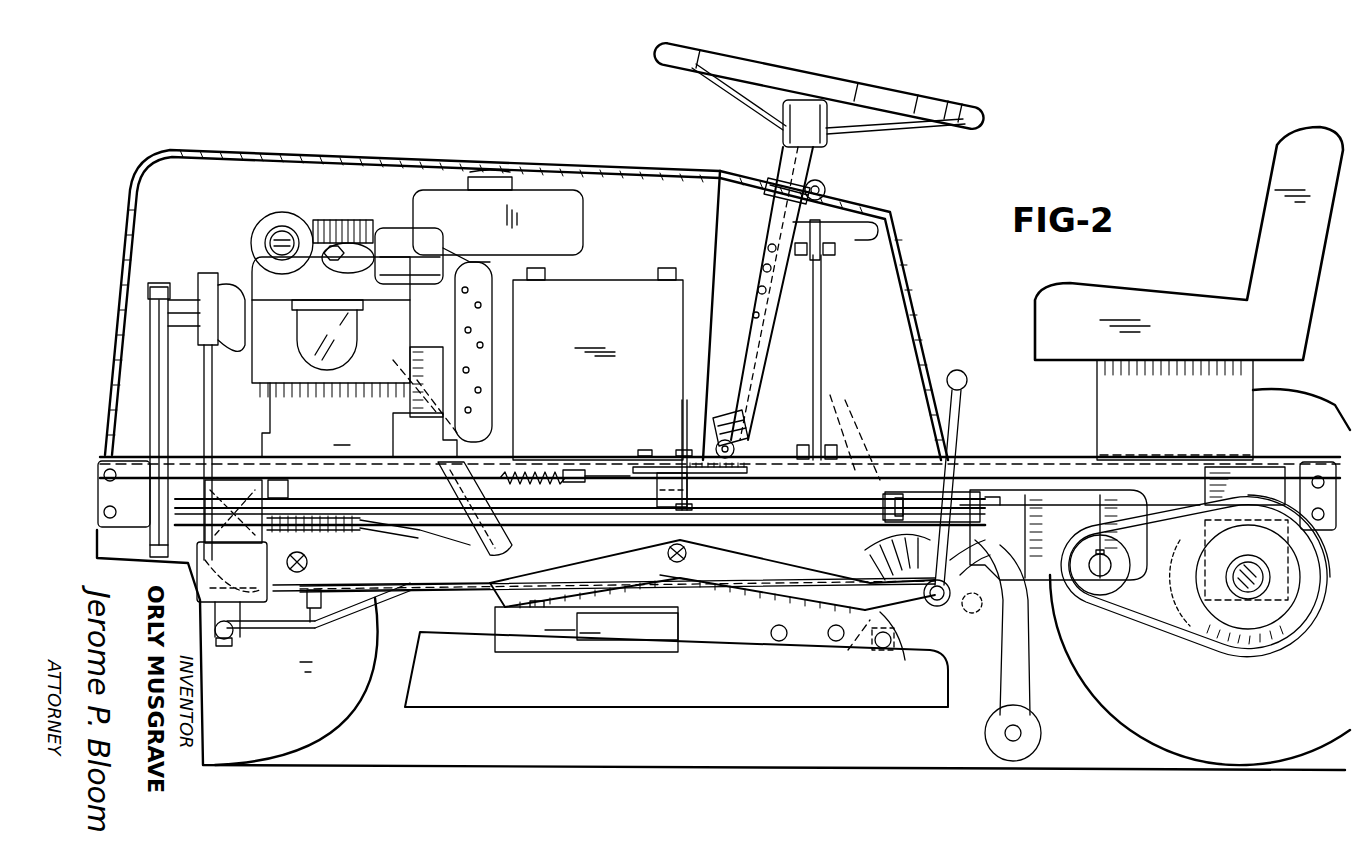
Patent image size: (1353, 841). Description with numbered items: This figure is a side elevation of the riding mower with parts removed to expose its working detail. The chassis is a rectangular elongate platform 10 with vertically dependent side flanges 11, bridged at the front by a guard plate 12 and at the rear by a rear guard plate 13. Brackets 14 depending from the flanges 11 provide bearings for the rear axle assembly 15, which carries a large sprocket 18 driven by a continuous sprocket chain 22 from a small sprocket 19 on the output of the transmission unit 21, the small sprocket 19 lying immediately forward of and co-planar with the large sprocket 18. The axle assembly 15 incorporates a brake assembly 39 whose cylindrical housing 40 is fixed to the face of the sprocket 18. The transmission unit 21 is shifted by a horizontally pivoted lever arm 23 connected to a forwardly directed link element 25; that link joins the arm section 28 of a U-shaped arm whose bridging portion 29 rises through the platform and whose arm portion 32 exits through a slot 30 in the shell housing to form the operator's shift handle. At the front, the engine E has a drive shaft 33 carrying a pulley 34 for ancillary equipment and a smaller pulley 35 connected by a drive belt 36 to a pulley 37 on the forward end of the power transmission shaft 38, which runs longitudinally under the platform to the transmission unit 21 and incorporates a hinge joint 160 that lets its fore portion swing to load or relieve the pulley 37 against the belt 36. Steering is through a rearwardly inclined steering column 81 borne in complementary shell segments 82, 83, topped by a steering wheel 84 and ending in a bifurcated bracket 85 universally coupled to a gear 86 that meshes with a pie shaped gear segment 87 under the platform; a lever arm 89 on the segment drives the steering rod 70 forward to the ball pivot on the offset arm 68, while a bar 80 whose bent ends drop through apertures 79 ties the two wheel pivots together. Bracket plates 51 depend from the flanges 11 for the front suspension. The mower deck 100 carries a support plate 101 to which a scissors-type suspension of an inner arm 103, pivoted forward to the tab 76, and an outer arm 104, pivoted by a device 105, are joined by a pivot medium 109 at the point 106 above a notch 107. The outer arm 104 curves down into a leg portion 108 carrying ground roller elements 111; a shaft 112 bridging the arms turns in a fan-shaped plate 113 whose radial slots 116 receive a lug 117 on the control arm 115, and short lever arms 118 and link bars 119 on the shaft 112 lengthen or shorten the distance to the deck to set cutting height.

The platform 10 is at (978, 454).
The flanges 11 is at (1181, 494).
The guard plate 12 is at (96, 478).
The rear guard plate 13 is at (1335, 490).
The brackets 14 is at (1222, 470).
The rear axle assembly 15 is at (1245, 570).
The large sprocket 18 is at (1222, 640).
The small sprocket 19 is at (1092, 597).
The transmission unit 21 is at (1073, 516).
The sprocket chain 22 is at (1165, 632).
The lever arm 23 is at (1020, 488).
The link element 25 is at (890, 478).
The arm section 28 is at (815, 484).
The bridging portion 29 is at (822, 302).
The slot 30 is at (858, 232).
The arm portion 32 is at (826, 190).
The drive shaft 33 is at (180, 298).
The pulley 34 is at (222, 285).
The smaller pulley 35 is at (148, 292).
The drive belt 36 is at (150, 360).
The pulley 37 is at (150, 545).
The power transmission shaft 38 is at (350, 502).
The brake assembly 39 is at (1290, 630).
The cylindrical housing 40 is at (1245, 535).
The bracket plate 51 is at (270, 472).
The offset arm 68 is at (235, 634).
The steering rod 70 is at (410, 595).
The tab 76 is at (285, 570).
The aperture 79 is at (305, 627).
The bar 80 is at (360, 612).
The steering column 81 is at (782, 140).
The shell segment 82 is at (766, 196).
The shell segment 83 is at (778, 183).
The steering wheel 84 is at (910, 100).
The bifurcated bracket 85 is at (755, 425).
The gear 86 is at (755, 460).
The gear segment 87 is at (680, 445).
The lever arm 89 is at (656, 485).
The mower blade housing 100 is at (492, 685).
The support plate 101 is at (685, 645).
The arm 103 is at (370, 576).
The arm 104 is at (800, 585).
The pivot device 105 is at (470, 596).
The point 106 is at (725, 548).
The notch 107 is at (690, 578).
The leg portion 108 is at (1030, 690).
The pivot medium 109 is at (668, 553).
The roller elements 111 is at (985, 736).
The shaft 112 is at (945, 605).
The fan-shaped plate 113 is at (968, 562).
The control arm 115 is at (835, 410).
The radial slots 116 is at (870, 545).
The lug 117 is at (945, 512).
The lever arm 118 is at (905, 640).
The link bar 119 is at (850, 645).
The hinge joint 160 is at (905, 492).